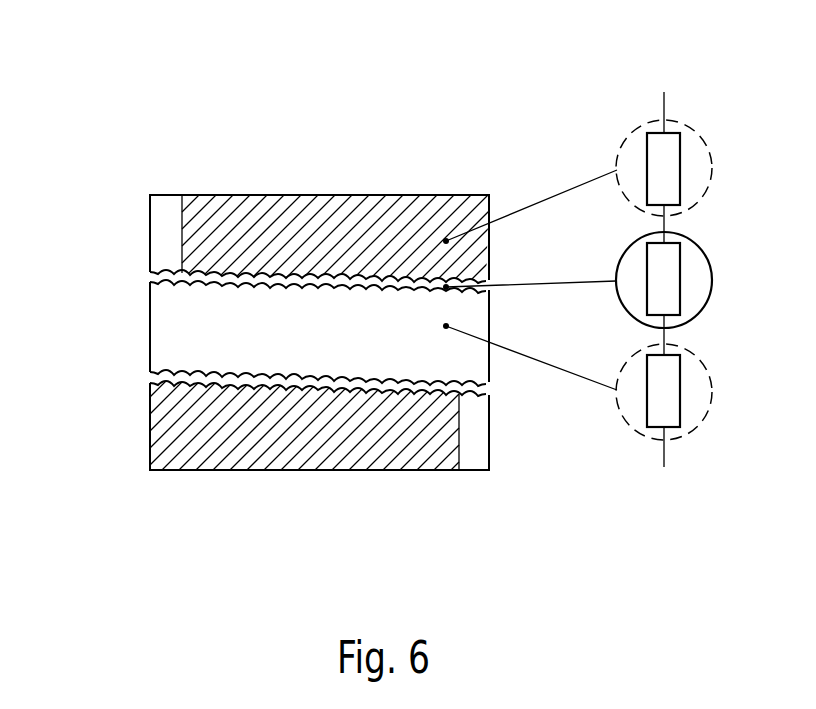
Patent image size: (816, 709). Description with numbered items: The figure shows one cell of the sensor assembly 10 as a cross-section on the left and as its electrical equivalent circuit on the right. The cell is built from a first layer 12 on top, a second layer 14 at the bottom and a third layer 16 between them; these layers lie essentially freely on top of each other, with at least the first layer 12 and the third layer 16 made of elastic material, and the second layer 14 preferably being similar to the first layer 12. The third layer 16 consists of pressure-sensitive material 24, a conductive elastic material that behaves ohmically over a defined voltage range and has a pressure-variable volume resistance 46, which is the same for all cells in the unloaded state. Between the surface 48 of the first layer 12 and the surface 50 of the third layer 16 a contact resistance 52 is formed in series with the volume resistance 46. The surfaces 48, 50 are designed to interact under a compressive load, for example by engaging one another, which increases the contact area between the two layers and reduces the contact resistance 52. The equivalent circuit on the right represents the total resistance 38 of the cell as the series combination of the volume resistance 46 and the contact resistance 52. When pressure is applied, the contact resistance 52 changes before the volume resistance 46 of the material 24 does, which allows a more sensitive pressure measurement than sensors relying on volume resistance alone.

The sensor assembly 10 is at (348, 112).
The first layer 12 is at (118, 232).
The second layer 14 is at (118, 423).
The third layer 16 is at (118, 328).
The pressure-sensitive material 24 is at (355, 340).
The total resistance 38 is at (760, 166).
The volume resistance 46 is at (672, 390).
The surface of the first layer 48 is at (195, 288).
The surface of the third layer 50 is at (233, 276).
The contact resistance 52 is at (672, 278).